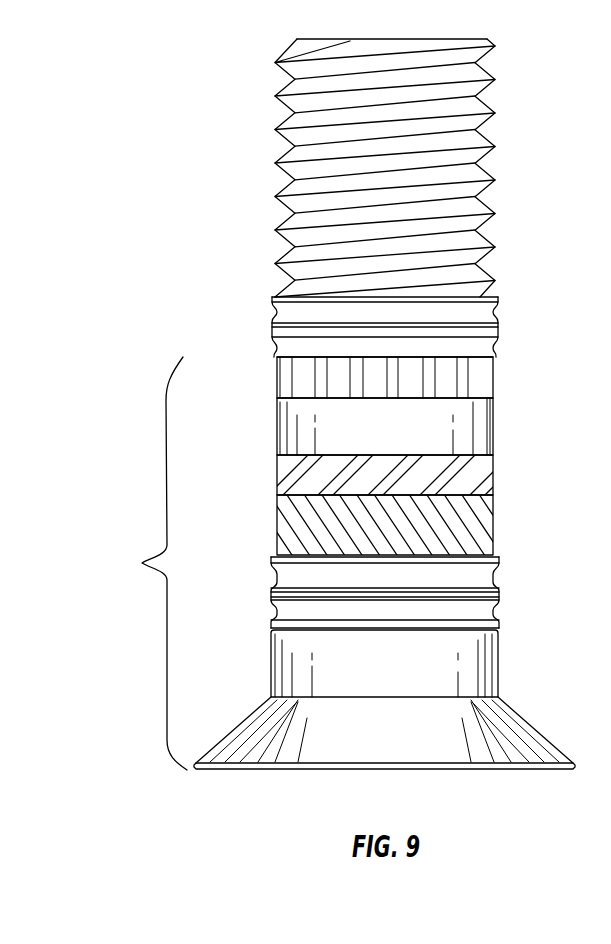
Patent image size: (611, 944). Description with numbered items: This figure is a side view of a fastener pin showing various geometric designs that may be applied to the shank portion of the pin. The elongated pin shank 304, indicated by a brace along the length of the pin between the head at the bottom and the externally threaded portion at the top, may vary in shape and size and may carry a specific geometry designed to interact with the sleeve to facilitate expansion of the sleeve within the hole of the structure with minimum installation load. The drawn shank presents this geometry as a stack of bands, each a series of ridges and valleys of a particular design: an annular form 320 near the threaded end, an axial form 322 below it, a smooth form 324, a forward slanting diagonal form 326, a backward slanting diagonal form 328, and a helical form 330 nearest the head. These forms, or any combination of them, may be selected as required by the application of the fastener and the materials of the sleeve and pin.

The elongated pin shank 304 is at (143, 563).
The annular ridges and valleys 320 is at (485, 348).
The axial ridges and valleys 322 is at (482, 378).
The smooth geometry 324 is at (485, 428).
The forward slanting diagonal ridges and valleys 326 is at (280, 468).
The backward slanting diagonal ridges and valleys 328 is at (280, 522).
The helical ridges and valleys 330 is at (478, 592).